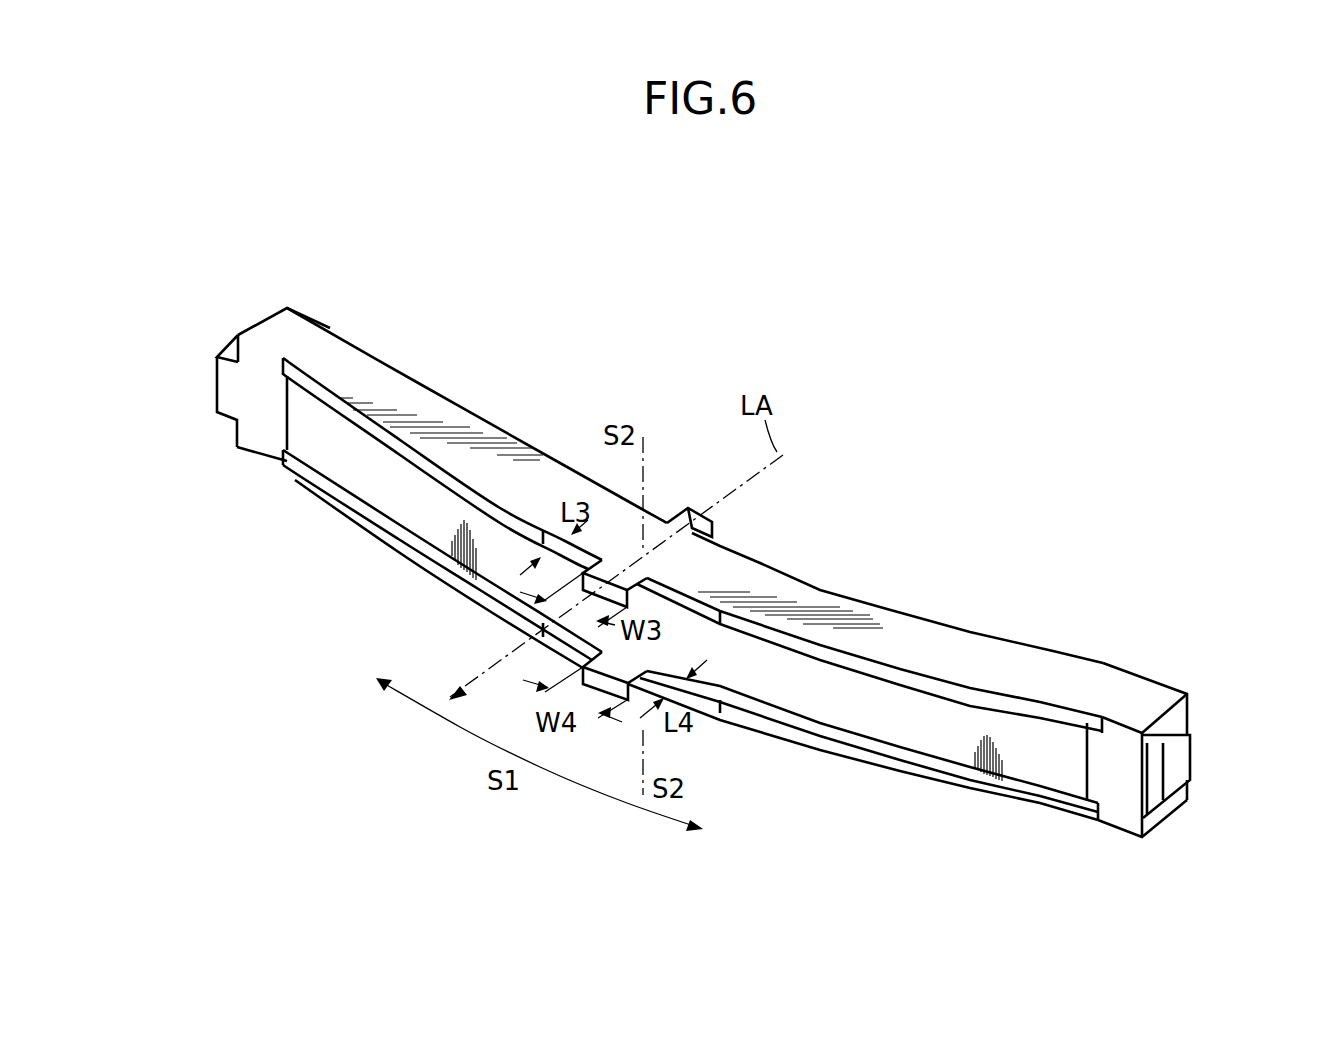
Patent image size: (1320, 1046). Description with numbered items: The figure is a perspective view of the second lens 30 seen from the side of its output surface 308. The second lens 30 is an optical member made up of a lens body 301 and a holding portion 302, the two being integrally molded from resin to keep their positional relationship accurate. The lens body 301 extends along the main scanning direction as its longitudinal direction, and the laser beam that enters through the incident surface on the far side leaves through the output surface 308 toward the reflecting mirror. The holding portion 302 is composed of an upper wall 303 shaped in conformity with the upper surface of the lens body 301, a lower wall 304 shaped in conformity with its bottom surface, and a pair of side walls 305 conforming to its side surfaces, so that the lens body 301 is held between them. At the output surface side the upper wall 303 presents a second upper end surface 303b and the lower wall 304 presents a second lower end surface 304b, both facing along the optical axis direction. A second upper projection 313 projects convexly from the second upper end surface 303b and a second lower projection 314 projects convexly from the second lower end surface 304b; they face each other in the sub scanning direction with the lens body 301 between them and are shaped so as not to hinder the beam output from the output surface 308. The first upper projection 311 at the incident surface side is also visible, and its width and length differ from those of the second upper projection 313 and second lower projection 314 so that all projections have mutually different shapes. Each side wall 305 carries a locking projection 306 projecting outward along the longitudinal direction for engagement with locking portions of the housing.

The second lens 30 is at (513, 296).
The lens body 301 is at (1016, 733).
The holding portion 302 is at (1020, 312).
The upper wall 303 is at (965, 660).
The second upper end surface 303b is at (357, 420).
The lower wall 304 is at (892, 748).
The second lower end surface 304b is at (390, 535).
The side walls 305 is at (262, 362).
The locking projection 306 is at (217, 381).
The output surface 308 is at (937, 750).
The first upper projection 311 is at (712, 533).
The second upper projection 313 is at (648, 586).
The second lower projection 314 is at (618, 668).